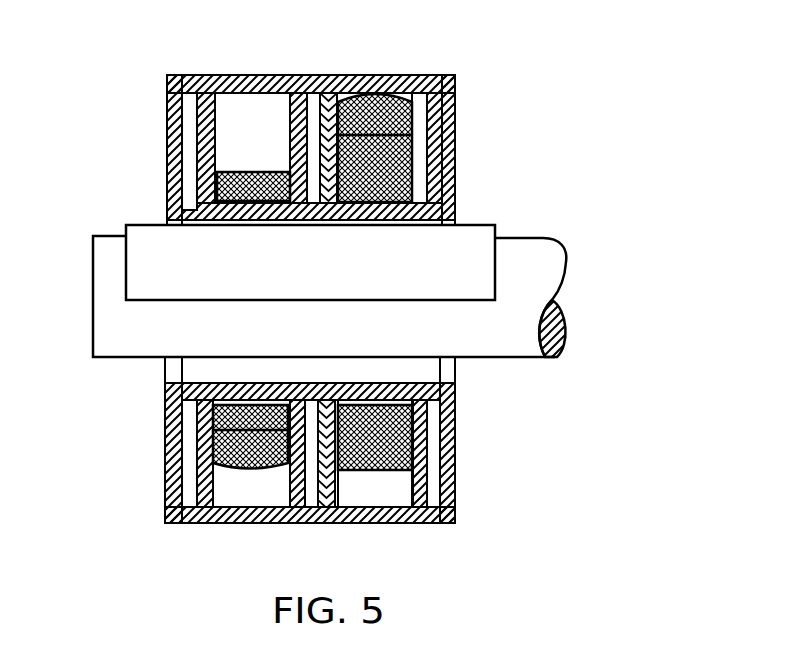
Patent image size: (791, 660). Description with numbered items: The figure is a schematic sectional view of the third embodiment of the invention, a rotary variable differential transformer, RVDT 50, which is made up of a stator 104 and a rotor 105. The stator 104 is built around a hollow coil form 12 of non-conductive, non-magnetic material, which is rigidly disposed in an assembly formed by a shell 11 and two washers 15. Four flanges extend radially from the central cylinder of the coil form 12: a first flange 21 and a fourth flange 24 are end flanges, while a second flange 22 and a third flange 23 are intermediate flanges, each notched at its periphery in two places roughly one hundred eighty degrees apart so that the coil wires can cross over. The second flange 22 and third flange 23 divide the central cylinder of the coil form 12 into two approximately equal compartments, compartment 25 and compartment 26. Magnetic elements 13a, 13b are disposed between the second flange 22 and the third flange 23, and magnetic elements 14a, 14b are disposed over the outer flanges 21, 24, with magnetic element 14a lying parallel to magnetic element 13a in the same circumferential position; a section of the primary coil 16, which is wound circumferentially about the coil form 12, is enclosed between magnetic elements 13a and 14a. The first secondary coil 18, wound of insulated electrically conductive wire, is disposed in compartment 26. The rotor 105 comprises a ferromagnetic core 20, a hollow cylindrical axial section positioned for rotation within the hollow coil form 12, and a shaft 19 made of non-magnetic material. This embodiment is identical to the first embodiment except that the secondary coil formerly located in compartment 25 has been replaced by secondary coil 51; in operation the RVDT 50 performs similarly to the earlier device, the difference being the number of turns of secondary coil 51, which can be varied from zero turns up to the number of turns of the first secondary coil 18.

The shell 11 is at (458, 78).
The coil form 12 is at (413, 410).
The magnetic element 13a is at (320, 100).
The magnetic element 13b is at (307, 497).
The magnetic element 14a is at (429, 75).
The magnetic element 14b is at (185, 493).
The washer 15 is at (455, 128).
The primary coil 16 is at (370, 100).
The first secondary coil 18 is at (413, 443).
The shaft 19 is at (542, 272).
The ferromagnetic core 20 is at (480, 243).
The first flange 21 is at (413, 497).
The second flange 22 is at (330, 500).
The third flange 23 is at (300, 100).
The fourth flange 24 is at (203, 73).
The compartment 25 is at (240, 115).
The compartment 26 is at (383, 493).
The RVDT 50 is at (483, 203).
The secondary coil 51 is at (278, 468).
The stator 104 is at (150, 178).
The rotor 105 is at (572, 305).